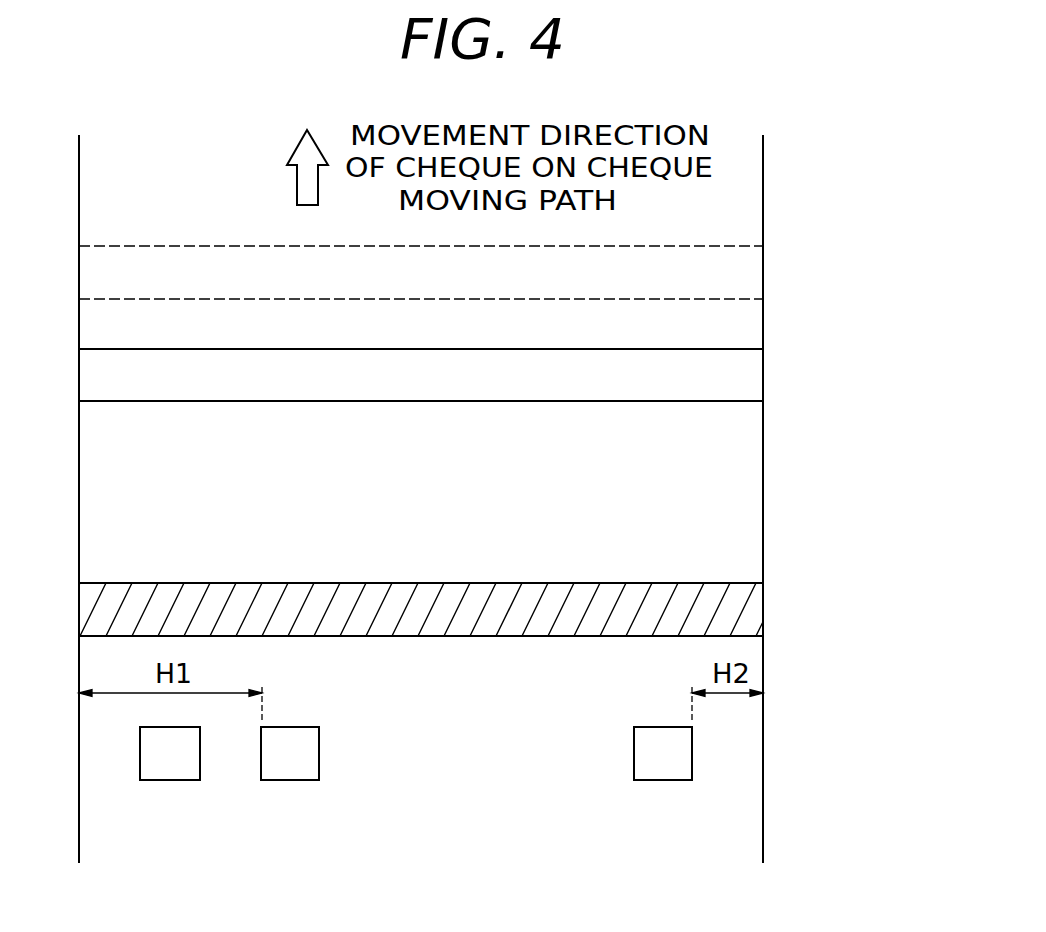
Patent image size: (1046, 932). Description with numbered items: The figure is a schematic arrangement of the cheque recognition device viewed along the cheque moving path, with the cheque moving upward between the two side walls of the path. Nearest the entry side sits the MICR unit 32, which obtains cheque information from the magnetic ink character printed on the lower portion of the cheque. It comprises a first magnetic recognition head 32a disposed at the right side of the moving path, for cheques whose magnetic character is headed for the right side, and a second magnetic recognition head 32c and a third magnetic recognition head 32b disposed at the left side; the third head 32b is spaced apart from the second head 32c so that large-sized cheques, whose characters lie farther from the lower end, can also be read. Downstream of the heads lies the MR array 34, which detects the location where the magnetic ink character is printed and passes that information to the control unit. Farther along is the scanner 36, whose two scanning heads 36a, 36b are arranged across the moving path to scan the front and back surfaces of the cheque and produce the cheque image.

The MICR unit 32 is at (409, 820).
The first magnetic recognition head 32a is at (658, 798).
The third magnetic recognition head 32b is at (290, 780).
The second magnetic recognition head 32c is at (172, 780).
The MR array 34 is at (432, 637).
The scanner 36 is at (509, 327).
The scanning head 36a is at (482, 403).
The scanning head 36b is at (715, 246).